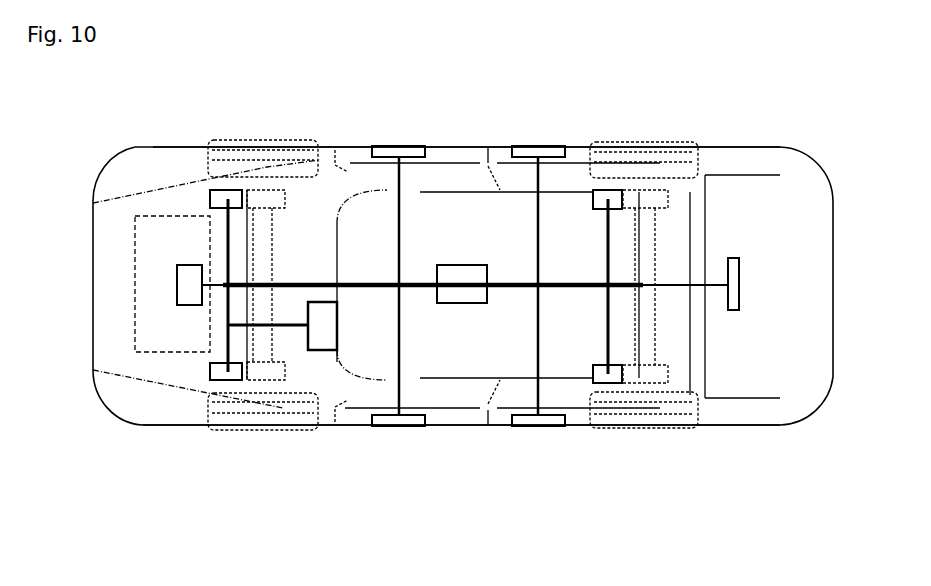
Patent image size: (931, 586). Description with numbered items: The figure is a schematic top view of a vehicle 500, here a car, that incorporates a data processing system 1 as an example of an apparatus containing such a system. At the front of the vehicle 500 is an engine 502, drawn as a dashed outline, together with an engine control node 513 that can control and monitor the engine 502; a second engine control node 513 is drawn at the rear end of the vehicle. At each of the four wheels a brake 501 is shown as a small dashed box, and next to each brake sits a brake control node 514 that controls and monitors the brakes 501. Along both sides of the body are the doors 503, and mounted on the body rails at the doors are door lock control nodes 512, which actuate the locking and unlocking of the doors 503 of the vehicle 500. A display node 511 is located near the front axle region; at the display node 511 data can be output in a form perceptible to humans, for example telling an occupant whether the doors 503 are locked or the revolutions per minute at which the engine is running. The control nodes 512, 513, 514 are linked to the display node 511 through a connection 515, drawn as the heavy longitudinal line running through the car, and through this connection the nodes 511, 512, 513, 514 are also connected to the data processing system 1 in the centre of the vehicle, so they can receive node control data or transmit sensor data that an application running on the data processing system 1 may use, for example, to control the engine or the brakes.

The data processing system 1 is at (462, 284).
The vehicle 500 is at (143, 395).
The brakes 501 is at (262, 197).
The engine 502 is at (172, 284).
The doors 503 is at (460, 153).
The display node 511 is at (330, 320).
The door lock control nodes 512 is at (398, 158).
The engine control node 513 is at (190, 287).
The brake control nodes 514 is at (232, 200).
The connection 515 is at (562, 288).